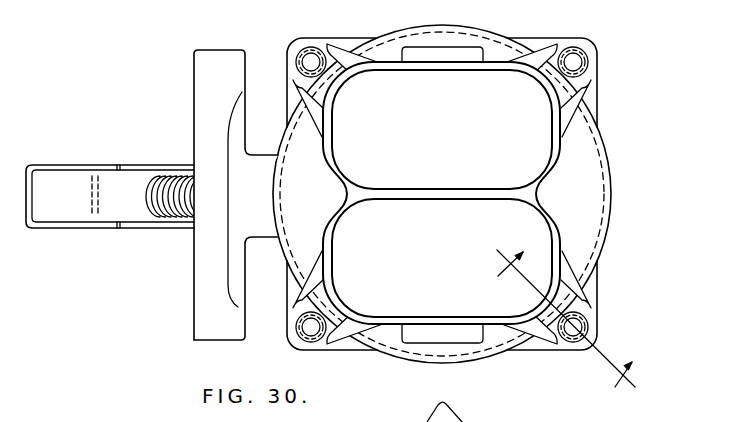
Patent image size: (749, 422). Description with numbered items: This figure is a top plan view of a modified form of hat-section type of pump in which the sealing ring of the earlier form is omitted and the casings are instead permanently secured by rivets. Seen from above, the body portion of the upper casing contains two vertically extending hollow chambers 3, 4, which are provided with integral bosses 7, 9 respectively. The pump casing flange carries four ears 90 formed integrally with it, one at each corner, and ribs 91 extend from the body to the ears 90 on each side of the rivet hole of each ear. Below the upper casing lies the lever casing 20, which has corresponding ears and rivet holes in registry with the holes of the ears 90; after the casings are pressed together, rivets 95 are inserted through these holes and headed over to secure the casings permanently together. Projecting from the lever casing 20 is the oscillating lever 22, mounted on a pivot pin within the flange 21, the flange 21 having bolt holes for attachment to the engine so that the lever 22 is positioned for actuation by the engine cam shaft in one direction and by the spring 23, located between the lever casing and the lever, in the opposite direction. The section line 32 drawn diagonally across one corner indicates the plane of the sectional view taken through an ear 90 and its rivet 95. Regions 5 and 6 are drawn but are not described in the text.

The hollow chamber 3 is at (503, 60).
The hollow chamber 4 is at (510, 345).
The upper port opening 5 is at (442, 129).
The lower port opening 6 is at (442, 258).
The boss 7 is at (484, 348).
The boss 9 is at (476, 46).
The lever casing 20 is at (268, 236).
The flange 21 is at (241, 327).
The oscillating lever 22 is at (161, 230).
The spring 23 is at (168, 172).
The section line 32 is at (552, 330).
The ear 90 is at (294, 41).
The rib 91 is at (540, 50).
The rivet 95 is at (578, 56).